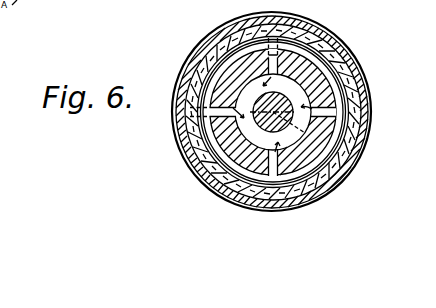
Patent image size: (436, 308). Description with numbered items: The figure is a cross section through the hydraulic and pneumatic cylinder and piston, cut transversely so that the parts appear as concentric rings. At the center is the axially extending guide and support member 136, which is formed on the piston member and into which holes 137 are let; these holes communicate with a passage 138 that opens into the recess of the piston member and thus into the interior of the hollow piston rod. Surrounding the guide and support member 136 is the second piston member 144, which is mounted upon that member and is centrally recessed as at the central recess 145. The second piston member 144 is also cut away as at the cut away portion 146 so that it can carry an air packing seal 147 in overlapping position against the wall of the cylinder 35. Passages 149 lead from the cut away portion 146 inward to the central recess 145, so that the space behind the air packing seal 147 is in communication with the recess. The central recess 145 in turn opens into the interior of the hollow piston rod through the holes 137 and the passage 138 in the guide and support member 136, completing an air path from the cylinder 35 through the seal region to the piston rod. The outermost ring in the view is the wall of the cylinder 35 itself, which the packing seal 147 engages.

The cylinder 35 is at (328, 50).
The guide and support member 136 is at (313, 114).
The holes 137 is at (357, 166).
The passage 138 is at (190, 150).
The second piston member 144 is at (322, 98).
The central recess 145 is at (300, 132).
The cut away portion 146 is at (328, 80).
The air packing seal 147 is at (333, 68).
The passages 149 is at (308, 34).